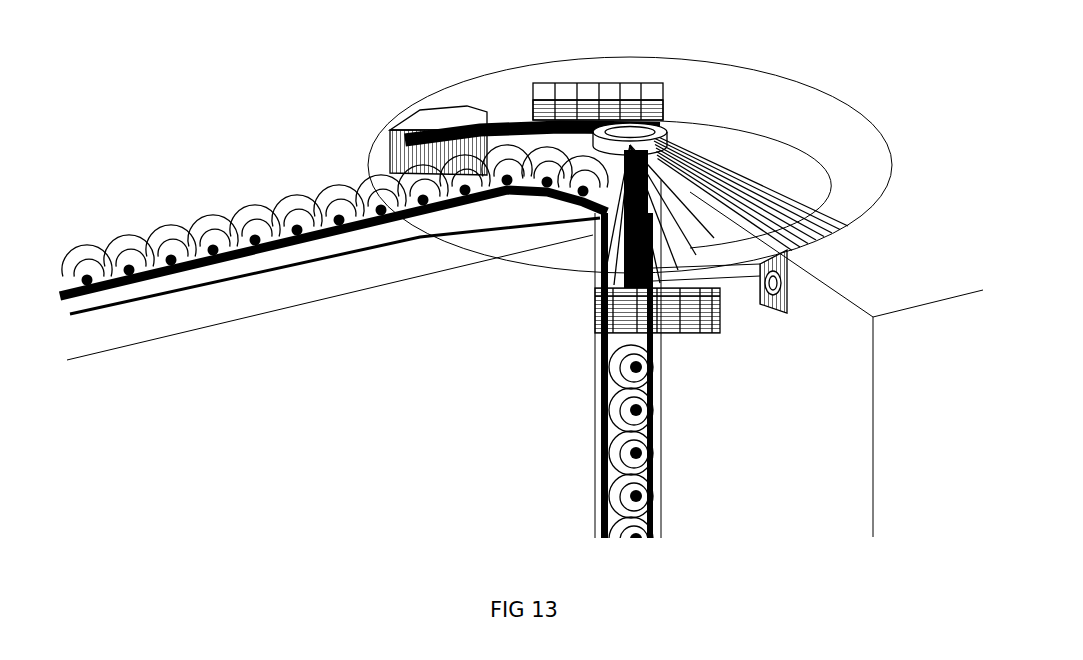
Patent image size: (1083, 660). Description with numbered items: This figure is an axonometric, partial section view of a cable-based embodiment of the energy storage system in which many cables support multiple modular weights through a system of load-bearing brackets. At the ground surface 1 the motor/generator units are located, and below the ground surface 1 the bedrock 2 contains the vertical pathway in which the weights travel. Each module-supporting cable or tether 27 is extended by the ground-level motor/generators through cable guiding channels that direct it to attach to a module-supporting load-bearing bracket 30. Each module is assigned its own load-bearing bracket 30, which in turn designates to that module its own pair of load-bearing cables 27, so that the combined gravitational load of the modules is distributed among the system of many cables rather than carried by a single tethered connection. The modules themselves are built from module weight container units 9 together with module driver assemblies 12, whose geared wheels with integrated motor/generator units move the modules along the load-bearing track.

The ground surface 1 is at (630, 167).
The bedrock 2 is at (525, 364).
The module weight container unit 9 is at (207, 233).
The module driver assembly 12 is at (410, 144).
The module-supporting cable or tether 27 is at (490, 128).
The module-supporting load-bearing bracket 30 is at (668, 250).